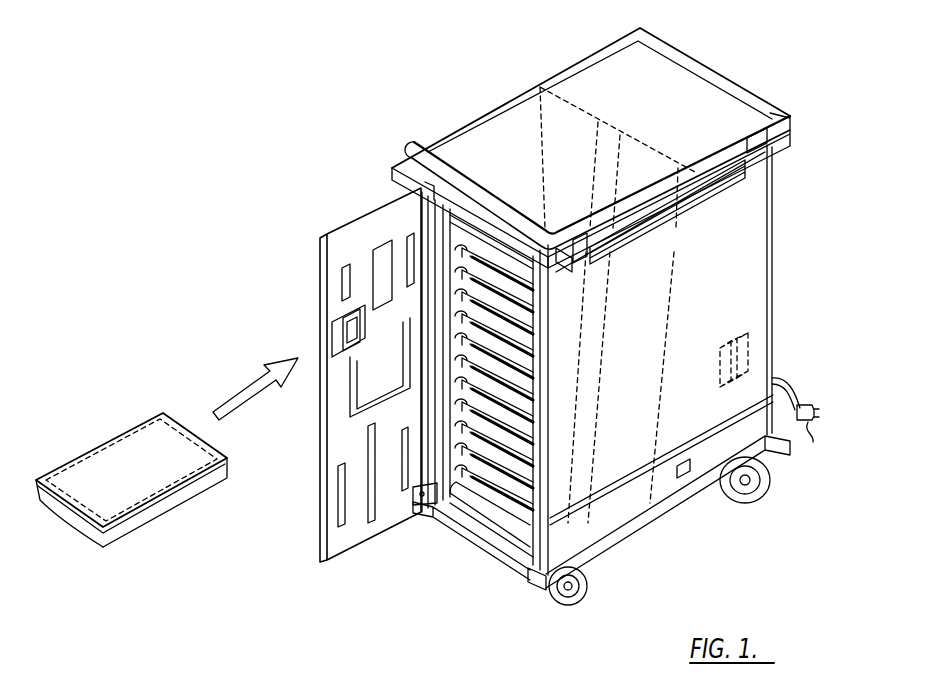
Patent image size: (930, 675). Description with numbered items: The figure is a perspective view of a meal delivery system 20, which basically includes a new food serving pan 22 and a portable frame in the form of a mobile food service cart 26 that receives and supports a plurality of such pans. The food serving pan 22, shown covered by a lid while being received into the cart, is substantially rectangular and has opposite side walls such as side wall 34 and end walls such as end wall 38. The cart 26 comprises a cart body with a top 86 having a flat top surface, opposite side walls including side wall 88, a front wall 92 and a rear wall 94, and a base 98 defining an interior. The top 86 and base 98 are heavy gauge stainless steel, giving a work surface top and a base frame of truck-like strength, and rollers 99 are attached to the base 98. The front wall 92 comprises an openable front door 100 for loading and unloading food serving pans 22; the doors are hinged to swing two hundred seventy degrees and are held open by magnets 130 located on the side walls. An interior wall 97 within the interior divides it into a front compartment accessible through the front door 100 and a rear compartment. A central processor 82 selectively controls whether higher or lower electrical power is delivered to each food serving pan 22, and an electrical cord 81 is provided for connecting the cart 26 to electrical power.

The meal delivery system 20 is at (189, 106).
The food serving pan 22 is at (94, 433).
The mobile food service cart 26 is at (498, 75).
The side wall 34 is at (157, 513).
The end wall 38 is at (73, 523).
The electrical cord 81 is at (800, 423).
The central processor 82 is at (748, 363).
The top 86 is at (643, 80).
The side wall 88 is at (740, 320).
The front wall 92 is at (425, 553).
The rear wall 94 is at (776, 240).
The interior wall 97 is at (658, 260).
The base 98 is at (643, 523).
The rollers 99 is at (600, 180).
The front door 100 is at (343, 223).
The magnets 130 is at (690, 473).